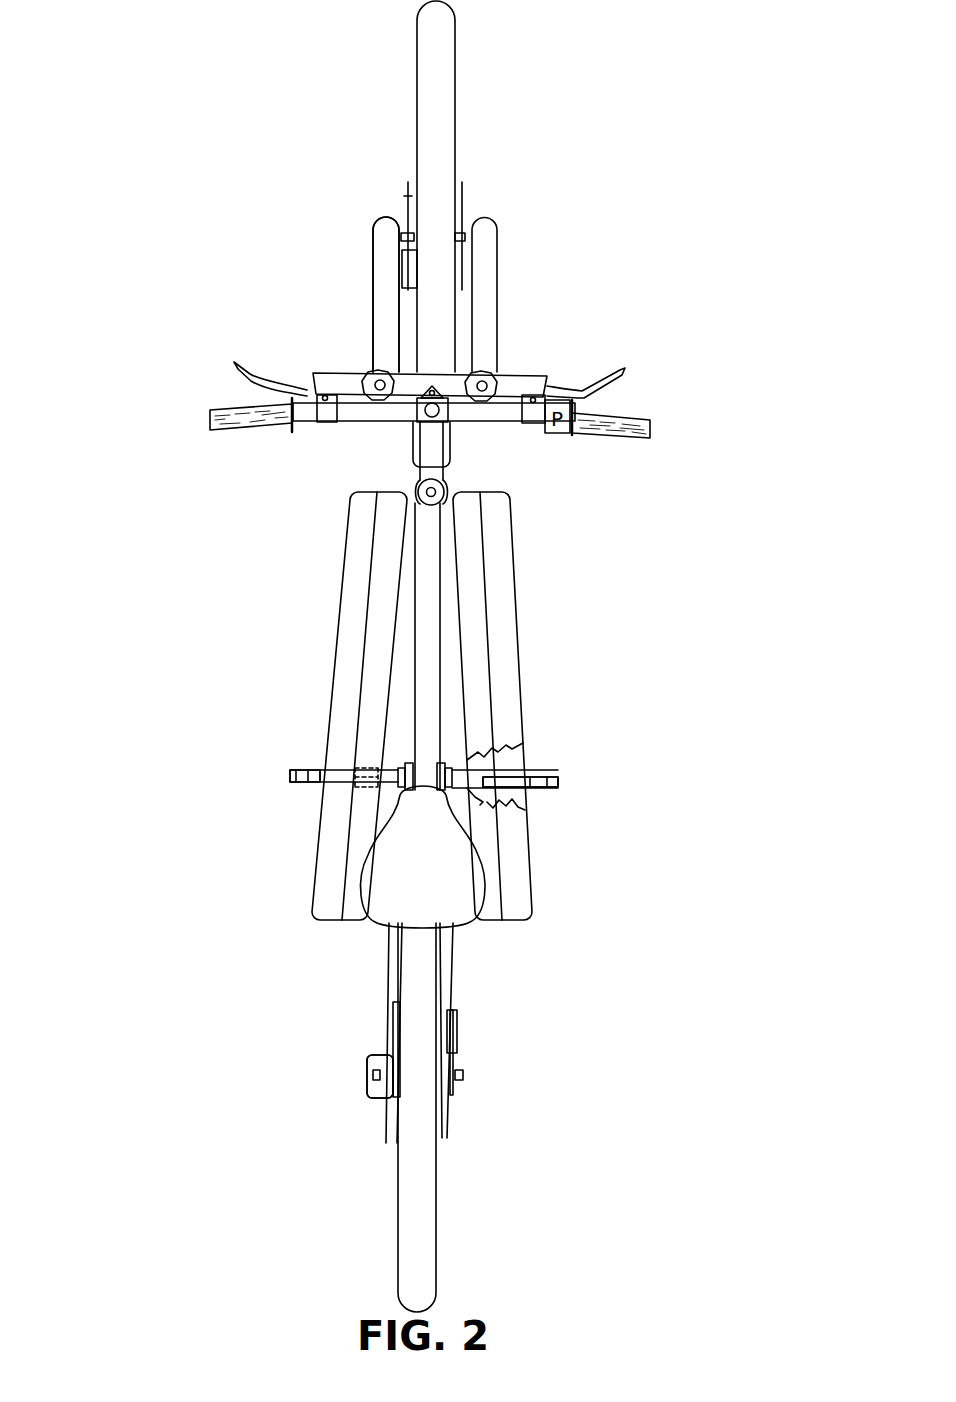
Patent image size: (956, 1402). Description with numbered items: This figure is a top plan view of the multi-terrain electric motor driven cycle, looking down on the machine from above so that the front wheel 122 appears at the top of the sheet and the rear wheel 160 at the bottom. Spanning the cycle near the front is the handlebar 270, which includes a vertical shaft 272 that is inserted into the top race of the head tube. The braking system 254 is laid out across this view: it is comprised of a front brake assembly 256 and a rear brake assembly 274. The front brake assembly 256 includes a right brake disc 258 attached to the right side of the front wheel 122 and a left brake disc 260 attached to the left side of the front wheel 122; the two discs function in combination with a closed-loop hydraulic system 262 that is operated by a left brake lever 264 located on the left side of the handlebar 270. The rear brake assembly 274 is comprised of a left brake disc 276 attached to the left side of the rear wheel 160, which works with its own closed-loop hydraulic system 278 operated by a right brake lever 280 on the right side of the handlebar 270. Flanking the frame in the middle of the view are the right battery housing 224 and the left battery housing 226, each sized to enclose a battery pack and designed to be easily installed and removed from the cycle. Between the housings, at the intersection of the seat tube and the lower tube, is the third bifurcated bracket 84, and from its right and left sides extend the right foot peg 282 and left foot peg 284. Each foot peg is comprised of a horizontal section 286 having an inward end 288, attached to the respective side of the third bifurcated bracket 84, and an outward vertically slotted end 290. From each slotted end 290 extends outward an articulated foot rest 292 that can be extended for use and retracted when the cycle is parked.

The front wheel 122 is at (440, 108).
The right brake disc 258 is at (462, 200).
The left brake disc 260 is at (408, 198).
The closed-loop hydraulic system 262 is at (407, 273).
The left brake lever 264 is at (272, 375).
The right brake lever 280 is at (562, 386).
The handlebar 270 is at (372, 410).
The vertical shaft 272 is at (440, 410).
The braking system 254 is at (365, 163).
The front brake assembly 256 is at (386, 294).
The rear brake assembly 274 is at (333, 1057).
The left battery housing 226 is at (335, 620).
The right battery housing 224 is at (513, 625).
The third bifurcated bracket 84 is at (438, 762).
The right foot peg 282 is at (540, 766).
The left foot peg 284 is at (298, 760).
The articulated foot rest 292 is at (290, 772).
The outward vertically slotted end 290 is at (485, 787).
The horizontal section 286 is at (470, 790).
The inward end 288 is at (482, 803).
The rear wheel 160 is at (417, 1023).
The left brake disc 276 is at (390, 1037).
The closed-loop hydraulic system 278 is at (367, 1082).